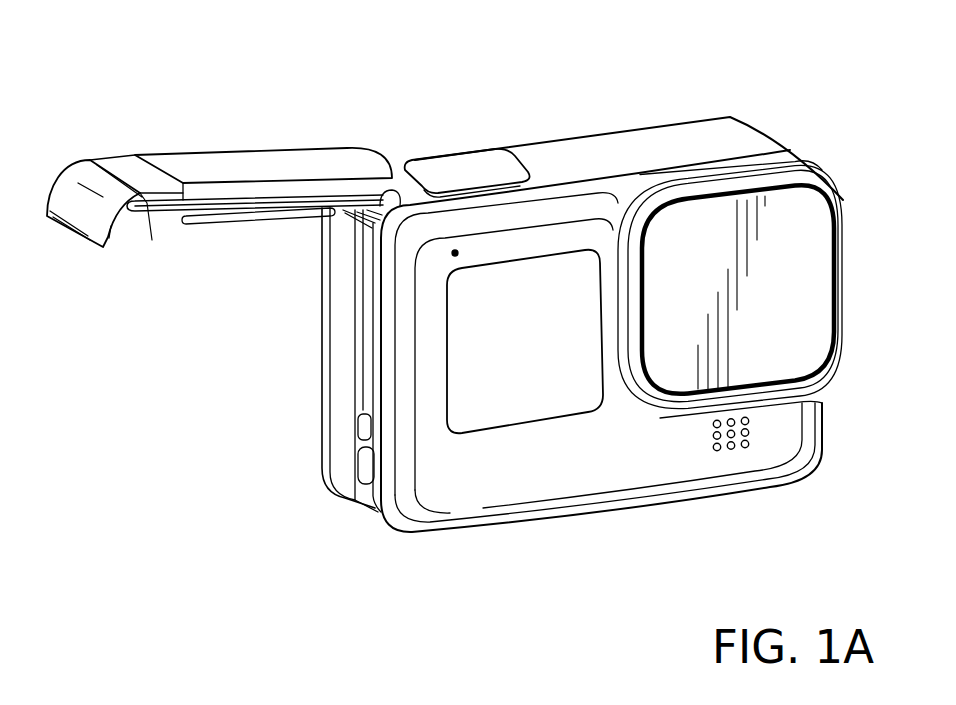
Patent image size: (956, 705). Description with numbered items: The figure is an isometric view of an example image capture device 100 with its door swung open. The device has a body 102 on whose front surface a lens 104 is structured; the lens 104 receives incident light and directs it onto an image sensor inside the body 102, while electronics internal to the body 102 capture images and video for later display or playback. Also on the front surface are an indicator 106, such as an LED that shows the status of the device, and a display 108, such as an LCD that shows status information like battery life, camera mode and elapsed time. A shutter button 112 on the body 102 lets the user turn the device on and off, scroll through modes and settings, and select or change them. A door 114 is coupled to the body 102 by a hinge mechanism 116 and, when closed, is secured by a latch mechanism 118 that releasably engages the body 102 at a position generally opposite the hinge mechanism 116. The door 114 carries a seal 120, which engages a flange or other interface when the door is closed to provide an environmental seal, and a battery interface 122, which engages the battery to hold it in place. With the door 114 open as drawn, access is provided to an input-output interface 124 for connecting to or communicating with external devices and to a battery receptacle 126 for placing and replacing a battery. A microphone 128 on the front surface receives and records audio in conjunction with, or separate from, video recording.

The image capture device 100 is at (799, 56).
The body 102 is at (636, 132).
The lens 104 is at (802, 288).
The indicator 106 is at (452, 254).
The display 108 is at (527, 403).
The shutter button 112 is at (421, 166).
The door 114 is at (272, 157).
The hinge mechanism 116 is at (390, 184).
The latch mechanism 118 is at (73, 195).
The seal 120 is at (163, 212).
The battery interface 122 is at (217, 224).
The input-output (I/O) interface 124 is at (366, 462).
The battery receptacle 126 is at (373, 242).
The microphone 128 is at (731, 449).